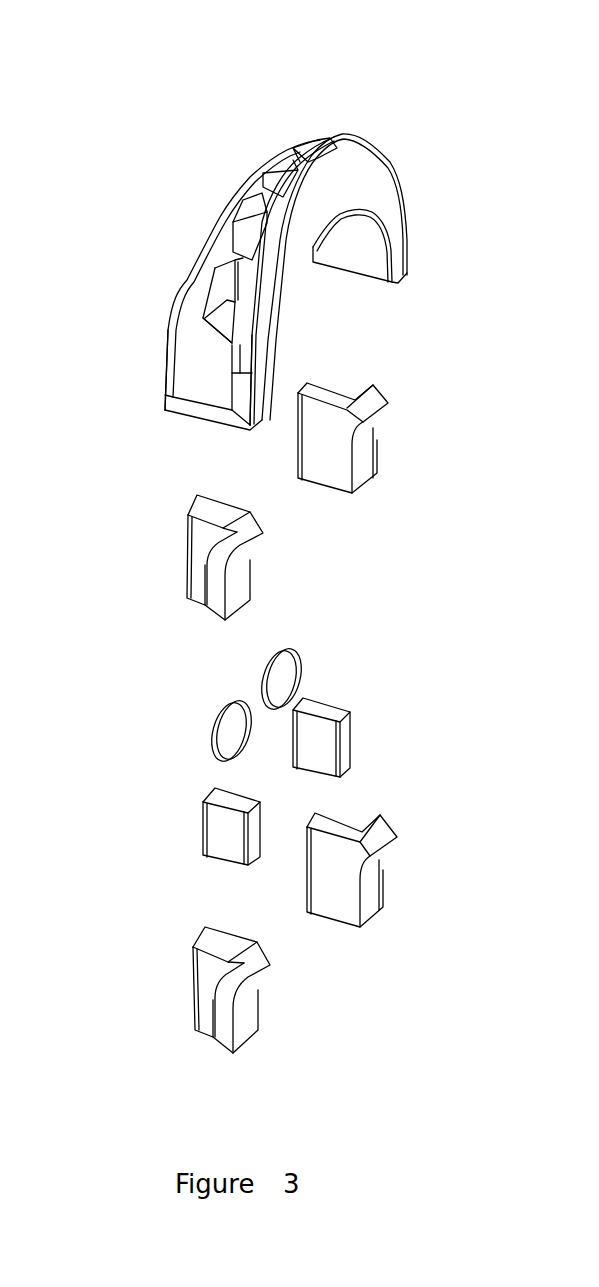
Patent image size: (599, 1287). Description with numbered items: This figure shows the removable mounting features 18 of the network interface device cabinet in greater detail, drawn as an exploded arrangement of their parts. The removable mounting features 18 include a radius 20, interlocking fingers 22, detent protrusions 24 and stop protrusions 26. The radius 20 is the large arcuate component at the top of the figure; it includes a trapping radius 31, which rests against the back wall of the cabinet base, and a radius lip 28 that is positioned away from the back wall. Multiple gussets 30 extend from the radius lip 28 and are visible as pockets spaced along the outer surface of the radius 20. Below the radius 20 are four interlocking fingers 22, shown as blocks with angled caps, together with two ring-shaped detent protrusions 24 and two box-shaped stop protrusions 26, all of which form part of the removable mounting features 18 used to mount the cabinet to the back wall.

The removable mounting features 18 is at (348, 49).
The radius 20 is at (380, 150).
The interlocking fingers 22 is at (380, 400).
The detent protrusions 24 is at (290, 663).
The stop protrusions 26 is at (343, 730).
The radius lip 28 is at (240, 332).
The gussets 30 is at (228, 277).
The trapping radius 31 is at (182, 363).